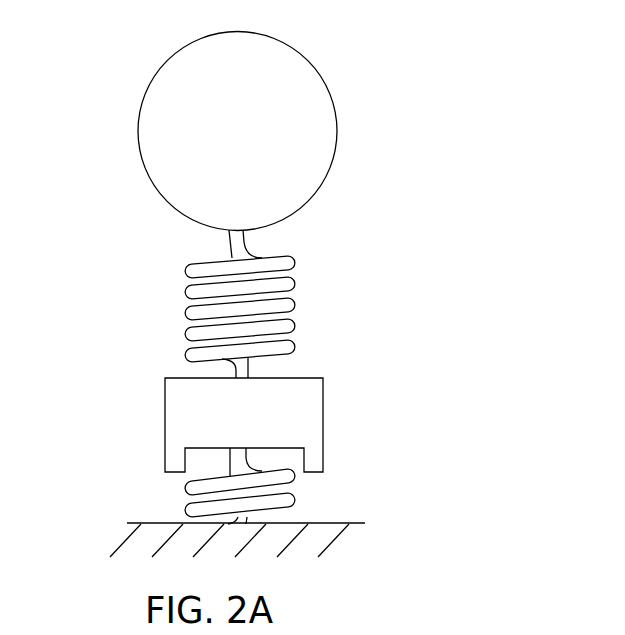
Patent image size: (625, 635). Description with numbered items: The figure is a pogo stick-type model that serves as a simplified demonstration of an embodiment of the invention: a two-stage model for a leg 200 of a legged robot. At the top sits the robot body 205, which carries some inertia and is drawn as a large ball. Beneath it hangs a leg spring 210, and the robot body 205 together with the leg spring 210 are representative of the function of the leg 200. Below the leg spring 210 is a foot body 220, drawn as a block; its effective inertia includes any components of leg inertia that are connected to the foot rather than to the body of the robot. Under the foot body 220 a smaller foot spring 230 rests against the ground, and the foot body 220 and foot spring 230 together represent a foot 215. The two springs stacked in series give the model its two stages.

The leg 200 is at (415, 126).
The robot body 205 is at (139, 132).
The leg spring 210 is at (186, 313).
The foot 215 is at (364, 437).
The foot body 220 is at (164, 440).
The foot spring 230 is at (184, 510).